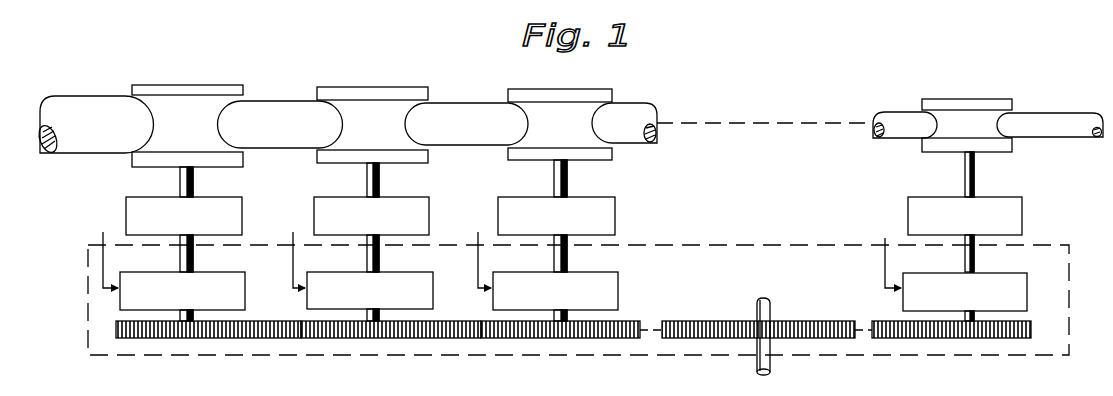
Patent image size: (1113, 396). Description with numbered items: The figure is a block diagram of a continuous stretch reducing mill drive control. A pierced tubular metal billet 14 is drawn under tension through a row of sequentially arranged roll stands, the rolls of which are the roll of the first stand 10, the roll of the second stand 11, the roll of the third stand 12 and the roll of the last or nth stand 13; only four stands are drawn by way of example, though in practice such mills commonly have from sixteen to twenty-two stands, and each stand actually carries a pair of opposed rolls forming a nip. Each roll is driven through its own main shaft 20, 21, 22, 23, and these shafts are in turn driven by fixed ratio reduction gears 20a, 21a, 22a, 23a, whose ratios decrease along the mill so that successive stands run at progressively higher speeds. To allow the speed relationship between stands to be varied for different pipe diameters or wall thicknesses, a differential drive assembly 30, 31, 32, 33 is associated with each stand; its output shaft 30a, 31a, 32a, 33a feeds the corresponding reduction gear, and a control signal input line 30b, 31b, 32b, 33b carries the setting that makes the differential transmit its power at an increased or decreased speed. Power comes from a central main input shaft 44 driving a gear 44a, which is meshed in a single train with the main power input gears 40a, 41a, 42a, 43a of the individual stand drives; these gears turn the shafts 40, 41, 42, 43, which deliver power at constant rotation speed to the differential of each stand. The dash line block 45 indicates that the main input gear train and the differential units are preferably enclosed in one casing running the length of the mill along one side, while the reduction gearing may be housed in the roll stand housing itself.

The roll of the first stand 10 is at (243, 93).
The roll of the second stand 11 is at (422, 95).
The roll of the third stand 12 is at (608, 102).
The roll of the last or nth stand 13 is at (1010, 105).
The metal billet 14 is at (90, 107).
The shaft 20 is at (193, 188).
The shaft 21 is at (380, 188).
The shaft 22 is at (568, 188).
The shaft 23 is at (975, 188).
The reduction gear 20a is at (228, 215).
The reduction gear 21a is at (421, 213).
The reduction gear 22a is at (610, 211).
The reduction gear 23a is at (1016, 214).
The differential drive assembly 30 is at (245, 277).
The differential drive assembly 31 is at (433, 297).
The differential drive assembly 32 is at (619, 297).
The differential drive assembly 33 is at (1024, 280).
The output shaft 30a is at (194, 262).
The output shaft 31a is at (380, 262).
The output shaft 32a is at (568, 262).
The output shaft 33a is at (975, 260).
The control signal input line 30b is at (103, 240).
The control signal input line 31b is at (293, 240).
The control signal input line 32b is at (478, 240).
The control signal input line 33b is at (885, 268).
The shaft 40 is at (181, 315).
The shaft 41 is at (367, 314).
The shaft 42 is at (554, 315).
The shaft 43 is at (968, 314).
The main power input gear 40a is at (190, 330).
The main power input gear 41a is at (388, 330).
The main power input gear 42a is at (575, 332).
The main power input gear 43a is at (937, 333).
The central main input shaft 44 is at (770, 368).
The gear 44a is at (741, 321).
The dash line block 45 is at (88, 348).